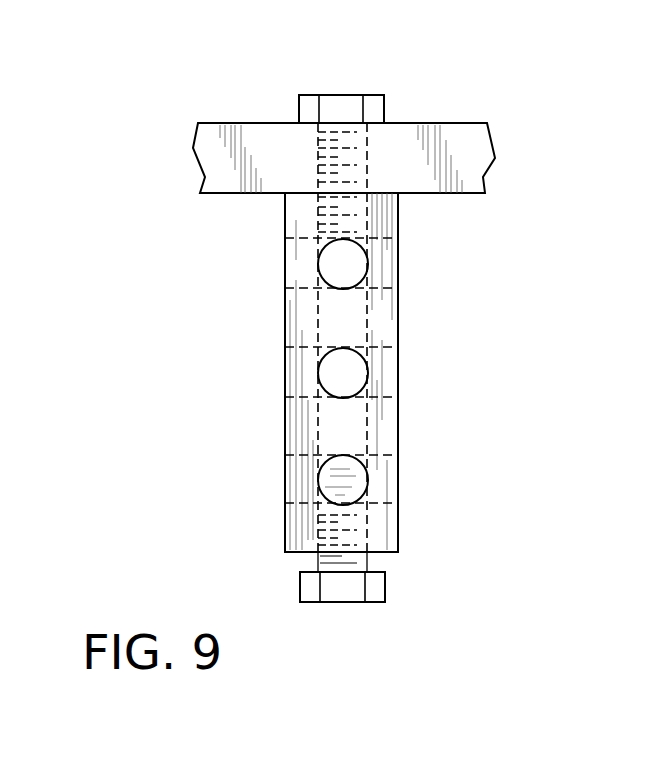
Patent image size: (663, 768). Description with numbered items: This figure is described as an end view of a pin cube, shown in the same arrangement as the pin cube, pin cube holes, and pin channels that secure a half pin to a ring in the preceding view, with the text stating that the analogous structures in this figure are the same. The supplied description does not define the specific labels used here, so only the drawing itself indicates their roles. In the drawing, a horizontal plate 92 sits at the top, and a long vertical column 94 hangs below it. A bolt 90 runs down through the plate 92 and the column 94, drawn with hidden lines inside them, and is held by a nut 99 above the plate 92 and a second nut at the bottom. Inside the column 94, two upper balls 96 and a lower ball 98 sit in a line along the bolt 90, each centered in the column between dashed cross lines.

The bolt 90 is at (384, 311).
The plate 92 is at (455, 124).
The tubular column 94 is at (382, 437).
The ball 96 is at (368, 260).
The lower ball 98 is at (318, 472).
The nut 99 is at (333, 95).